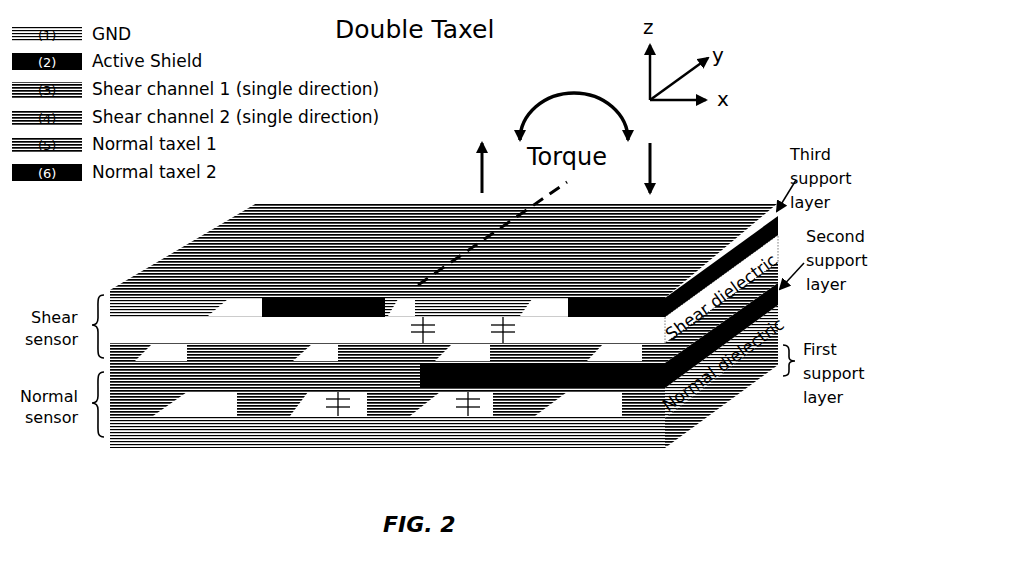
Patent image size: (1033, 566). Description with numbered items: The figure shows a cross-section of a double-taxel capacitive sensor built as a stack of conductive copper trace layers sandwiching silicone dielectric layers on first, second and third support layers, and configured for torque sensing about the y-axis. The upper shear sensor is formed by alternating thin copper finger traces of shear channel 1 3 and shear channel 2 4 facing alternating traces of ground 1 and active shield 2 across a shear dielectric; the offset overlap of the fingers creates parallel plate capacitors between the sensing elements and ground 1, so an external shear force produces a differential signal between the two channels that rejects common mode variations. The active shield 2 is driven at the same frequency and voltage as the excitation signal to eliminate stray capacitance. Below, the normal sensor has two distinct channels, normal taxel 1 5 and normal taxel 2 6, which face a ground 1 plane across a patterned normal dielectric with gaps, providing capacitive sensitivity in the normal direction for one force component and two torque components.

The ground 1 is at (387, 373).
The active shield 2 is at (520, 266).
The shear channel 1 3 is at (387, 353).
The shear channel 2 4 is at (388, 353).
The normal taxel 1 5 is at (265, 390).
The normal taxel 2 6 is at (594, 350).